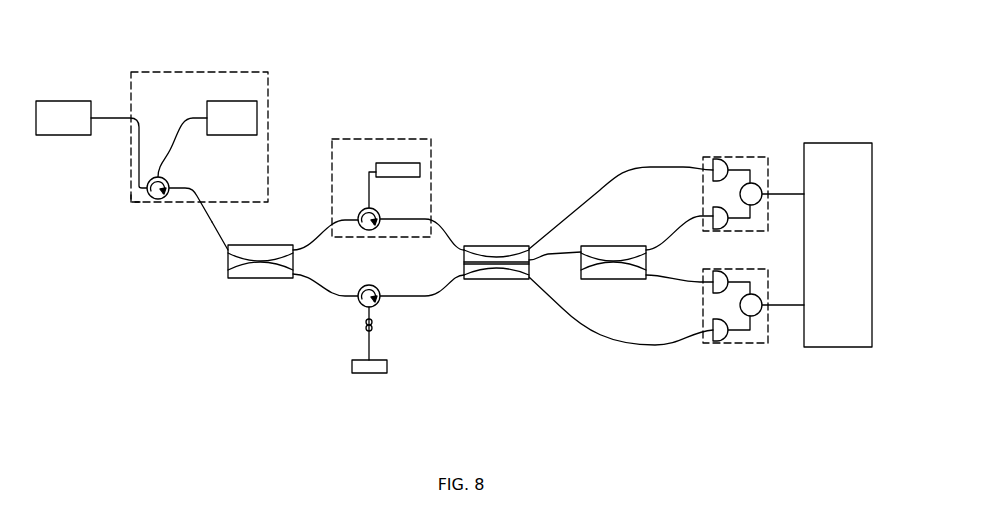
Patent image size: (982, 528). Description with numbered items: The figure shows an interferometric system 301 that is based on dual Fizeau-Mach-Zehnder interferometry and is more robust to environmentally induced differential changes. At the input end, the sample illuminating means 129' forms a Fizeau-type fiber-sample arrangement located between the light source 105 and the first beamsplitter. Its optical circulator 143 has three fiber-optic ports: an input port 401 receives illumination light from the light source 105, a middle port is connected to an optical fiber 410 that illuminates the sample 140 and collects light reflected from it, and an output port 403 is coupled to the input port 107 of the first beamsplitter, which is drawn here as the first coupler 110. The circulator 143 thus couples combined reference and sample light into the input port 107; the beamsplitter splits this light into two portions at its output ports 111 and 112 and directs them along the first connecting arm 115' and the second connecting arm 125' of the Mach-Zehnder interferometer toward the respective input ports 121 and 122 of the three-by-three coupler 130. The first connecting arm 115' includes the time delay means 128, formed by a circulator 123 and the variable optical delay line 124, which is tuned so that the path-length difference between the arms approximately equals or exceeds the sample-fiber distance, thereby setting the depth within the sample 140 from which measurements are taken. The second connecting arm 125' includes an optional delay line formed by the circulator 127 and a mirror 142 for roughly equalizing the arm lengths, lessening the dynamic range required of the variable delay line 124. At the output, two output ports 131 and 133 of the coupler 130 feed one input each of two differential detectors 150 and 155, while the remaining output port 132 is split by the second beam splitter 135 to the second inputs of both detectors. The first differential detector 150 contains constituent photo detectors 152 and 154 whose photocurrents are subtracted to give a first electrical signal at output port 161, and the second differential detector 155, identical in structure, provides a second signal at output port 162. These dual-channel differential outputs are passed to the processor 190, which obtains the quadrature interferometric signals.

The interferometric system 301 is at (532, 70).
The light source 105 is at (74, 101).
The input port 401 is at (130, 112).
The sample 140 is at (225, 101).
The optical fiber 410 is at (172, 147).
The optical circulator 143 is at (168, 178).
The sample illuminating means 129' is at (125, 222).
The output port 403 is at (173, 200).
The input port 107 is at (217, 240).
The first coupler 110 is at (262, 245).
The output port 111 is at (312, 222).
The output port 112 is at (302, 281).
The time delay means 128 is at (344, 138).
The variable optical delay line 124 is at (388, 163).
The circulator 123 is at (381, 231).
The circulator 127 is at (360, 286).
The mirror 142 is at (373, 377).
The first connecting arm 115' is at (443, 198).
The second connecting arm 125' is at (440, 323).
The input port 121 is at (464, 246).
The input port 122 is at (458, 280).
The 3×3 coupler 130 is at (495, 246).
The output port 131 is at (550, 226).
The output port 132 is at (551, 262).
The output port 133 is at (538, 289).
The second beam splitter 135 is at (612, 246).
The first differential detector 150 is at (748, 157).
The photo detector 152 is at (720, 157).
The photo detector 154 is at (720, 231).
The second differential detector 155 is at (762, 221).
The output port 161 is at (776, 190).
The output port 162 is at (770, 300).
The processor 190 is at (873, 143).